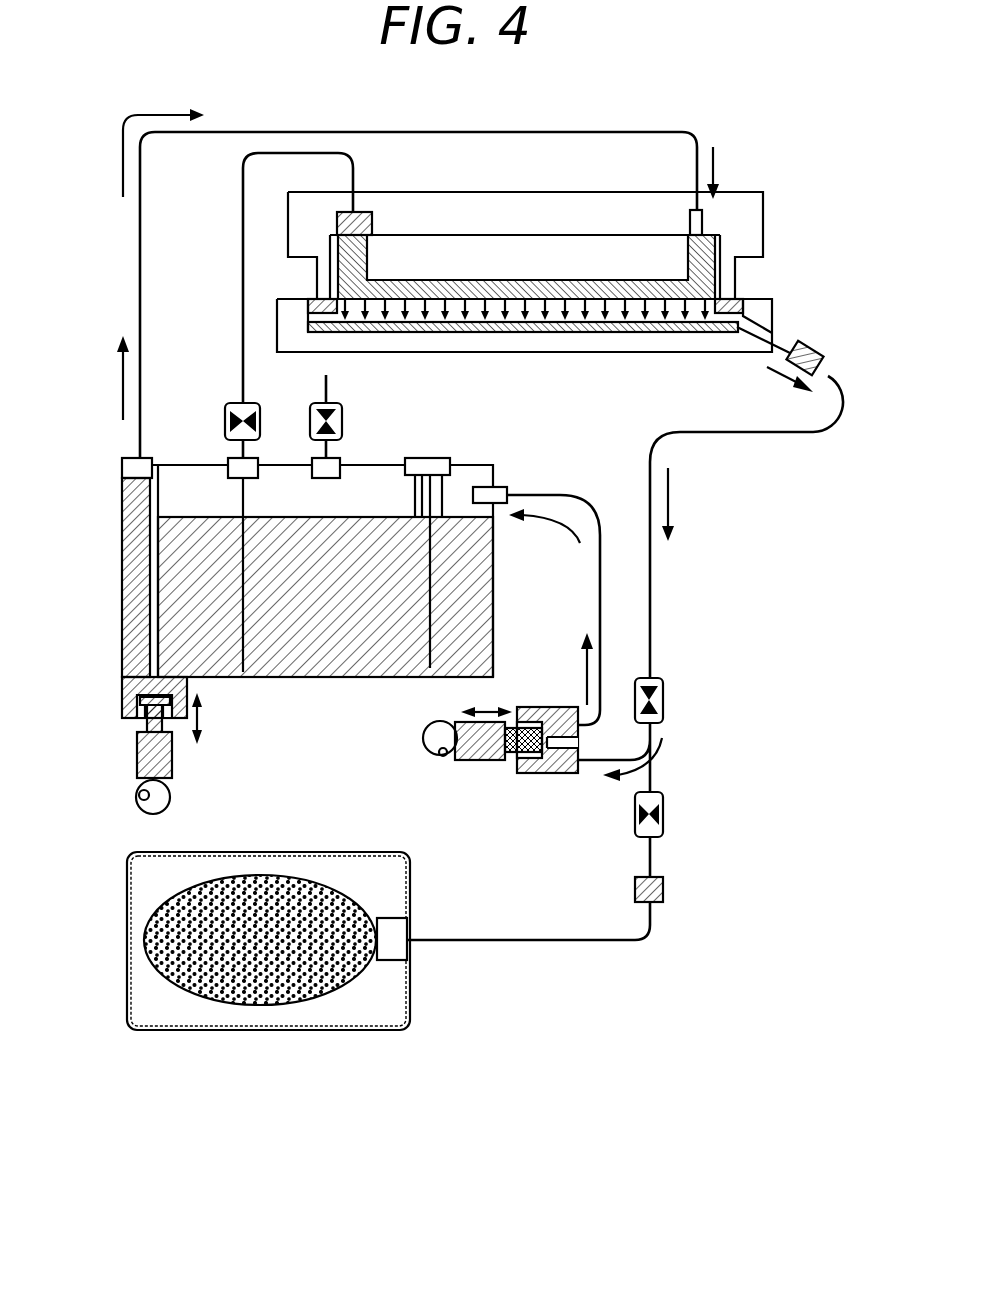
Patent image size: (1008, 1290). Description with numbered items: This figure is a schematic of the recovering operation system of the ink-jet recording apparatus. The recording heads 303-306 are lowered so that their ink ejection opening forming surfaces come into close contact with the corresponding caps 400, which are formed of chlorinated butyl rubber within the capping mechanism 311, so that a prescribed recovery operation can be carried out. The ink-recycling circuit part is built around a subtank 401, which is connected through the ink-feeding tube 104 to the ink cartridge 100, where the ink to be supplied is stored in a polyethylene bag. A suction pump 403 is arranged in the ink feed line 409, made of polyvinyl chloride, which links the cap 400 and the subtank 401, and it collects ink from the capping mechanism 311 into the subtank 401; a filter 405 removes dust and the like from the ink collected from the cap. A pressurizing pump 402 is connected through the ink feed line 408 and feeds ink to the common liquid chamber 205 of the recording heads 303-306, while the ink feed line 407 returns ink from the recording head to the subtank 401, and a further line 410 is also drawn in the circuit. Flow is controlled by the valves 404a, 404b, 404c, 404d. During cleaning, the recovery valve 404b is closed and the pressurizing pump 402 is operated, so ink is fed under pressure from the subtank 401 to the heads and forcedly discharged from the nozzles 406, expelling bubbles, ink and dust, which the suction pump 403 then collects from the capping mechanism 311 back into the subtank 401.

The recording heads 303-306 is at (735, 200).
The common liquid chamber 205 is at (465, 283).
The cap 400 is at (308, 302).
The nozzles 406 is at (535, 335).
The capping mechanism 311 is at (762, 305).
The filter 405 is at (368, 212).
The ink feed line 408 is at (140, 284).
The ink feed line 407 is at (243, 345).
The recovery valve 404b is at (225, 428).
The valve 404c is at (343, 412).
The subtank 401 is at (318, 660).
The pressurizing pump 402 is at (122, 700).
The pipe 410 is at (540, 495).
The suction pump 403 is at (548, 775).
The ink feed line 409 is at (752, 433).
The valve 404d is at (663, 700).
The valve 404a is at (663, 810).
The ink-feeding tube 104 is at (527, 942).
The ink cartridge 100 is at (155, 1008).